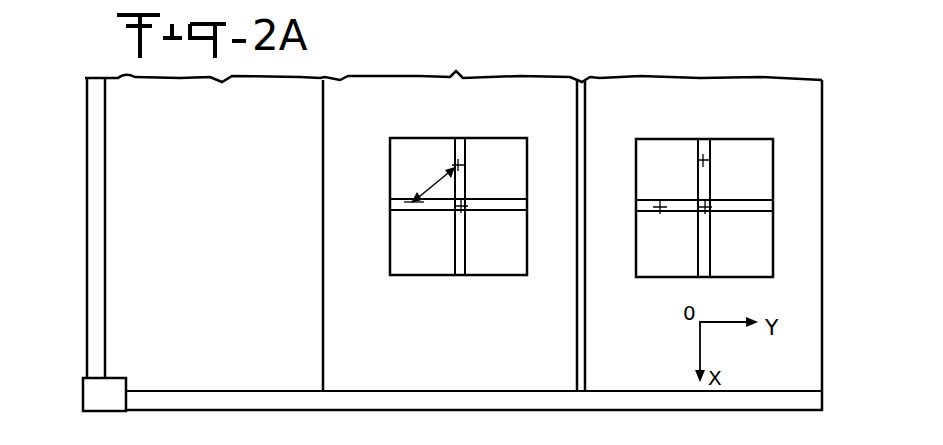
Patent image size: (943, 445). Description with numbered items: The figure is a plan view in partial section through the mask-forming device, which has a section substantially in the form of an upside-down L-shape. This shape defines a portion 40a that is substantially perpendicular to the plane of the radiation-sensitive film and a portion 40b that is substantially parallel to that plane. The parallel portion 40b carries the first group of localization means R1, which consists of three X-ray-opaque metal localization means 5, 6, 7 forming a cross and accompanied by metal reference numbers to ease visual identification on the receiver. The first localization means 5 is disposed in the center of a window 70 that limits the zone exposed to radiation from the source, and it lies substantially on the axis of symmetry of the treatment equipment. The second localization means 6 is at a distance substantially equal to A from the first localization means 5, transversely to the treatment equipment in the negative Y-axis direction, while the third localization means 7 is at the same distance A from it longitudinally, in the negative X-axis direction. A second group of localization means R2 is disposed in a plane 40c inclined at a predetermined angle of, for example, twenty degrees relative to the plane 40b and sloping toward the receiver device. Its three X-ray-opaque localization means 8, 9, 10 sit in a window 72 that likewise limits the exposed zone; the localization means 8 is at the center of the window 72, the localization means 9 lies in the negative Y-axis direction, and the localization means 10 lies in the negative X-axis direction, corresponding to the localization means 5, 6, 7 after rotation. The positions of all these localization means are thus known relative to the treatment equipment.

The portion substantially perpendicular to the plane F 40a is at (117, 236).
The portion substantially parallel to the plane F 40b is at (380, 103).
The inclined plane 40c is at (680, 103).
The window 70 is at (390, 232).
The window 72 is at (640, 236).
The first group of localization means R1 is at (478, 172).
The second group of localization means R2 is at (726, 185).
The first localization means 5 is at (466, 212).
The second localization means 6 is at (410, 202).
The third localization means 7 is at (455, 168).
The localization means 8 is at (708, 211).
The localization means 9 is at (661, 212).
The localization means 10 is at (700, 167).
The distance A is at (441, 184).